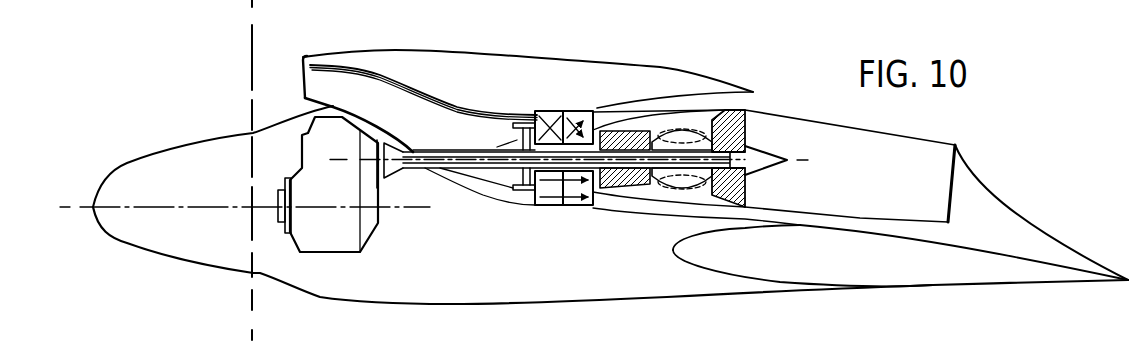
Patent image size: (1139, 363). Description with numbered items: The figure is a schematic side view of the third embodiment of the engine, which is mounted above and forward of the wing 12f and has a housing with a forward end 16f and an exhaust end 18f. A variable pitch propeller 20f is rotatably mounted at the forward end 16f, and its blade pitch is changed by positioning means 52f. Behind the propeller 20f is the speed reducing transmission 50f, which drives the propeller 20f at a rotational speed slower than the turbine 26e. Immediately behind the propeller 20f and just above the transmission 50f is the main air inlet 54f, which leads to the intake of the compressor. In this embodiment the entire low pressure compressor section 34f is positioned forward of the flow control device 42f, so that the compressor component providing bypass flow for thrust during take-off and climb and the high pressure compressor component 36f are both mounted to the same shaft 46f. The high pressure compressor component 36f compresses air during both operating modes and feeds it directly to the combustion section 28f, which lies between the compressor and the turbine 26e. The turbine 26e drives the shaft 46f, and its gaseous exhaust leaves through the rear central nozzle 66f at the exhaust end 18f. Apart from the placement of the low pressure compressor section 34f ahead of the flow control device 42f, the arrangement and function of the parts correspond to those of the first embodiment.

The wing 12f is at (925, 286).
The forward end 16f is at (313, 285).
The exhaust end 18f is at (983, 213).
The variable pitch propeller 20f is at (250, 75).
The turbine 26e is at (745, 120).
The combustion section 28f is at (686, 128).
The low pressure compressor section 34f is at (517, 188).
The high pressure compressor component 36f is at (625, 132).
The flow control device 42f is at (560, 205).
The shaft 46f is at (625, 175).
The speed reducing transmission 50f is at (355, 247).
The positioning means 52f is at (207, 153).
The main air inlet 54f is at (307, 78).
The rear central nozzle 66f is at (957, 180).